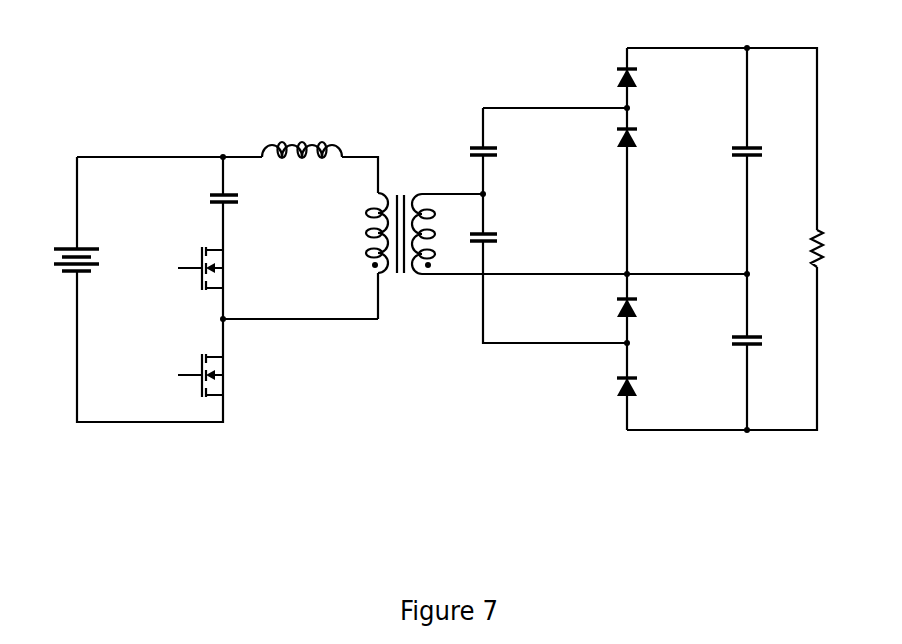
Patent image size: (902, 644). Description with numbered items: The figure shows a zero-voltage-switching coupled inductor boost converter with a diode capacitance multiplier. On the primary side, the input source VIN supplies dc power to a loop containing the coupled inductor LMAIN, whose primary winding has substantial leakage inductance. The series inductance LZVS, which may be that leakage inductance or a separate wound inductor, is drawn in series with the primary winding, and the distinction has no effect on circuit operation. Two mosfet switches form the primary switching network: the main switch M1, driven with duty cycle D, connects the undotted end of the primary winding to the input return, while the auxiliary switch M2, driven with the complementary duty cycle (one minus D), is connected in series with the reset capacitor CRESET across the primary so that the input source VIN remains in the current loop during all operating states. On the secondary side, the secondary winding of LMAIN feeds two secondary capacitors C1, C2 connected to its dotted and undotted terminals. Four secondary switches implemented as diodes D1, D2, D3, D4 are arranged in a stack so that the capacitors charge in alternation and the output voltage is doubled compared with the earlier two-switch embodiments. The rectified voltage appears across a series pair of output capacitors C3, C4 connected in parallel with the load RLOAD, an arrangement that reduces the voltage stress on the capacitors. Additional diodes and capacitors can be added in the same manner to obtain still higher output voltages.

The input source VIN is at (54, 261).
The reset capacitor CRESET is at (246, 222).
The mosfet switch M2 is at (189, 268).
The mosfet switch M1 is at (207, 375).
The series inductor LZVS is at (302, 133).
The coupled inductor LMAIN is at (424, 219).
The secondary capacitor C1 is at (462, 134).
The secondary capacitor C2 is at (462, 221).
The diode D1 is at (645, 80).
The diode D2 is at (645, 140).
The diode D3 is at (645, 310).
The diode D4 is at (645, 390).
The output capacitor C3 is at (723, 136).
The output capacitor C4 is at (723, 323).
The load RLOAD is at (851, 251).